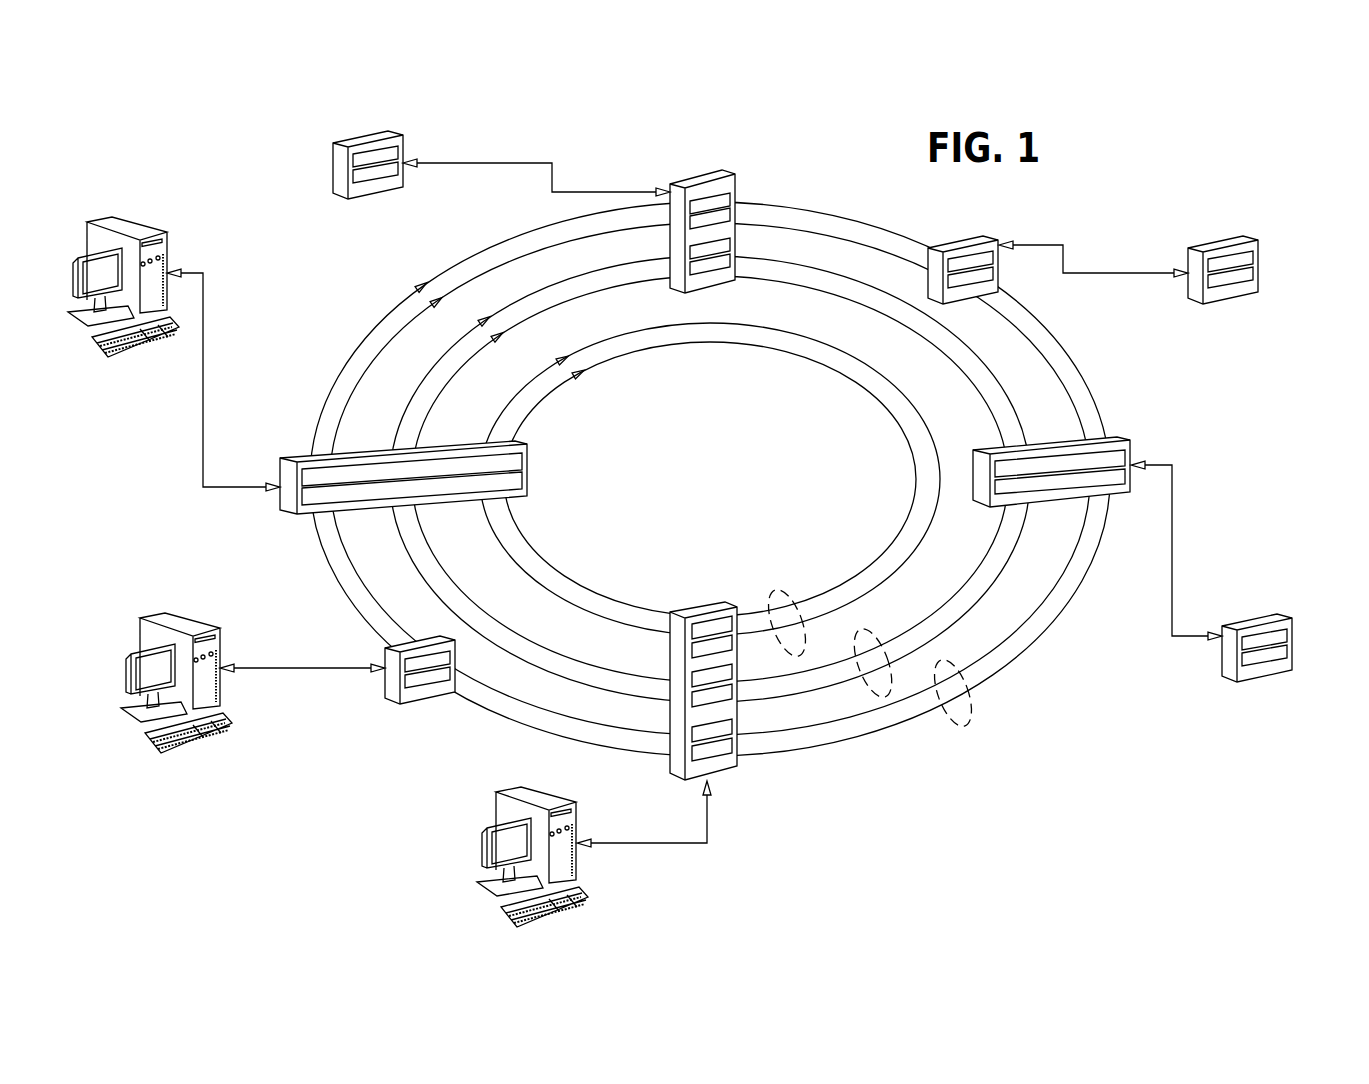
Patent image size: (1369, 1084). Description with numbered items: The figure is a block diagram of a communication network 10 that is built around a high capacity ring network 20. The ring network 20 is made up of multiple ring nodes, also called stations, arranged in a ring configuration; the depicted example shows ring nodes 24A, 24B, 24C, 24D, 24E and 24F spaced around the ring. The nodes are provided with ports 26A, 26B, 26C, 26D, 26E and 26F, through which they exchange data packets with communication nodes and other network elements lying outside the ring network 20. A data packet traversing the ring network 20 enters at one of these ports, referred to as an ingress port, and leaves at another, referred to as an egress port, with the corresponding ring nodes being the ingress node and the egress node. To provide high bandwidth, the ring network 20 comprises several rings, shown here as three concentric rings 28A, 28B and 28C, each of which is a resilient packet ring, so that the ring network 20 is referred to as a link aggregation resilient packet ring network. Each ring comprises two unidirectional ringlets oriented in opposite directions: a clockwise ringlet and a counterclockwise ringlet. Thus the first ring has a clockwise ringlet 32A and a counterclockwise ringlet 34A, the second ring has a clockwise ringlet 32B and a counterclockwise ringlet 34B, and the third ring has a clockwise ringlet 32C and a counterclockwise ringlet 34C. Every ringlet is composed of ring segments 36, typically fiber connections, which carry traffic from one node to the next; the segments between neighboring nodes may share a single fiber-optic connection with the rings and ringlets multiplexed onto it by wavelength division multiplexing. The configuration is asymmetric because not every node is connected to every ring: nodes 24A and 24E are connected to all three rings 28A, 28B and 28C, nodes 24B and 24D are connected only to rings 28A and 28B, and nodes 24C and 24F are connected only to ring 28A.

The communication network 10 is at (1240, 154).
The ring network 20 is at (830, 198).
The ring node 24A is at (283, 496).
The ring node 24B is at (733, 181).
The ring node 24C is at (975, 236).
The ring node 24D is at (1137, 443).
The ring node 24E is at (722, 763).
The ring node 24F is at (415, 704).
The port 26A is at (203, 432).
The port 26B is at (476, 162).
The port 26C is at (1103, 273).
The port 26D is at (1174, 550).
The port 26E is at (642, 843).
The port 26F is at (290, 664).
The ring 28A is at (953, 664).
The ring 28B is at (877, 632).
The ring 28C is at (783, 588).
The clockwise ringlet 32A is at (853, 743).
The clockwise ringlet 32B is at (1013, 557).
The clockwise ringlet 32C is at (941, 503).
The counterclockwise ringlet 34A is at (812, 727).
The counterclockwise ringlet 34B is at (948, 602).
The counterclockwise ringlet 34C is at (910, 520).
The ring segment 36 is at (833, 273).